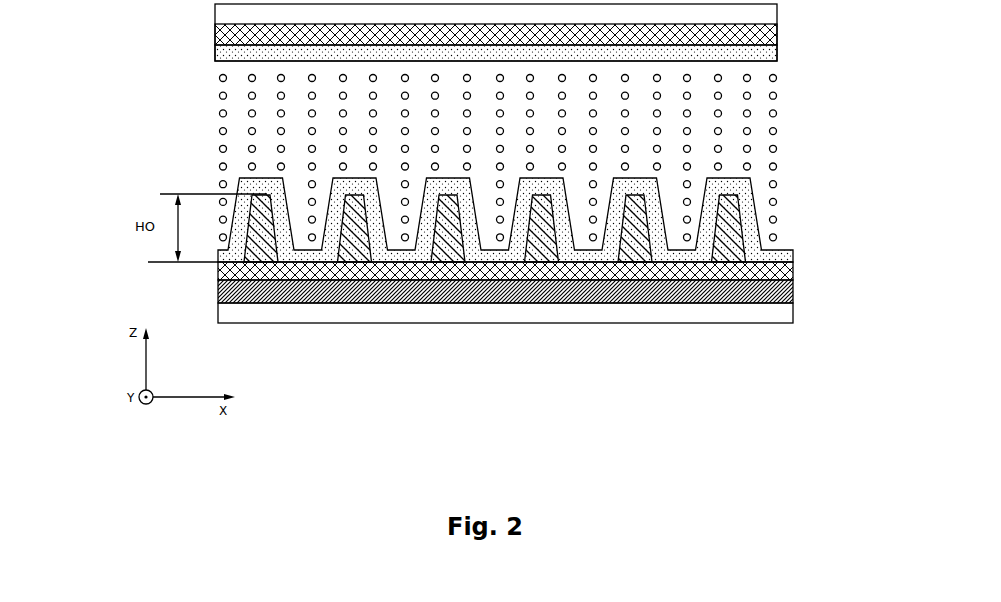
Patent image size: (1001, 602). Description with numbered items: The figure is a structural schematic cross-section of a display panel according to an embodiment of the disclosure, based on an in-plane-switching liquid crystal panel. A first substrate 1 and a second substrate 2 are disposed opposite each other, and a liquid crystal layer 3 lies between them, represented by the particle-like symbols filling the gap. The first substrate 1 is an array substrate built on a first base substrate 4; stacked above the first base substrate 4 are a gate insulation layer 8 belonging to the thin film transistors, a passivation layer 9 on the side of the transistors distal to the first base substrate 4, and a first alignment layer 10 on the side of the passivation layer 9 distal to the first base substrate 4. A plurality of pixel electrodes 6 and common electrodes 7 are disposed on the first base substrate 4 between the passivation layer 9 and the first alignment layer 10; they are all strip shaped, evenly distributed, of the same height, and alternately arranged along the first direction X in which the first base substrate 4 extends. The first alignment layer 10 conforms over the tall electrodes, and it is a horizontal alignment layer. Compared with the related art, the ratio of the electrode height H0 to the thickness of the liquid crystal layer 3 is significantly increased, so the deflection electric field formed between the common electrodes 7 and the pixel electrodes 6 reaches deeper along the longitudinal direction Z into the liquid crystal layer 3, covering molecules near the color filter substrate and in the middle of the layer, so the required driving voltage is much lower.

The first substrate 1 is at (488, 270).
The second substrate 2 is at (180, 36).
The liquid crystal layer 3 is at (763, 153).
The first base substrate 4 is at (795, 317).
The pixel electrodes 6 is at (261, 268).
The common electrodes 7 is at (354, 268).
The gate insulation layer 8 is at (801, 290).
The passivation layer 9 is at (801, 270).
The first alignment layer 10 is at (798, 254).